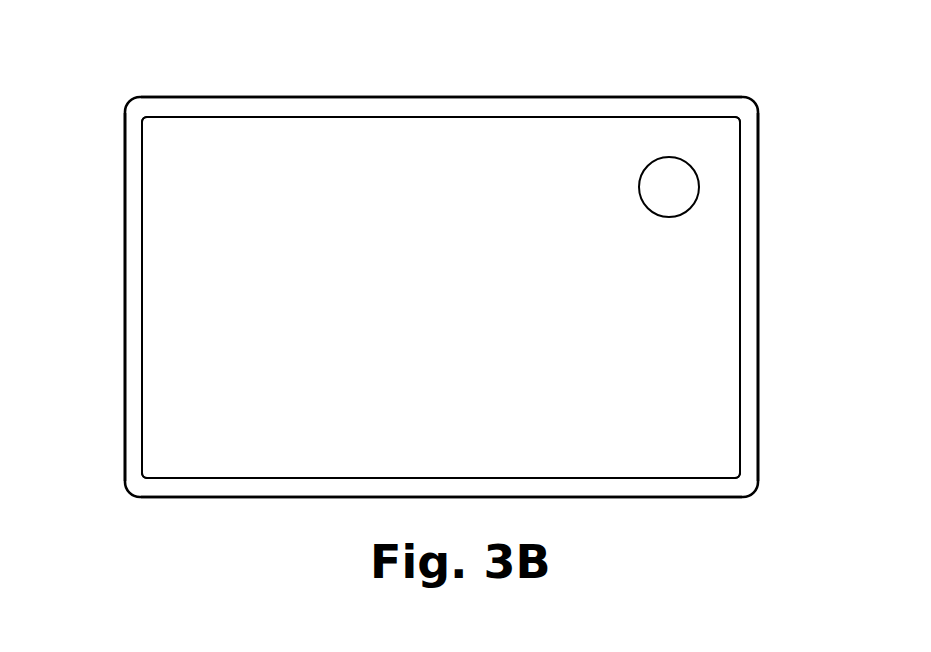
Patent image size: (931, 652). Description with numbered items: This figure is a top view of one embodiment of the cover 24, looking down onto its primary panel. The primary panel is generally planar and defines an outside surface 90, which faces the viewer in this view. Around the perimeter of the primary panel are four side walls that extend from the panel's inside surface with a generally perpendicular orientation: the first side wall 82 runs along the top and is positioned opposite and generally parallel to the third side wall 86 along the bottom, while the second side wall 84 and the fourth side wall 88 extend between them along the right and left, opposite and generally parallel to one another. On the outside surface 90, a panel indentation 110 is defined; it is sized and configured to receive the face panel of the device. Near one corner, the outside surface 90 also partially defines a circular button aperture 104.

The cover 24 is at (697, 69).
The first side wall 82 is at (546, 97).
The second side wall 84 is at (760, 419).
The third side wall 86 is at (650, 499).
The fourth side wall 88 is at (123, 266).
The outside surface 90 is at (723, 312).
The button aperture 104 is at (688, 190).
The panel indentation 110 is at (152, 140).